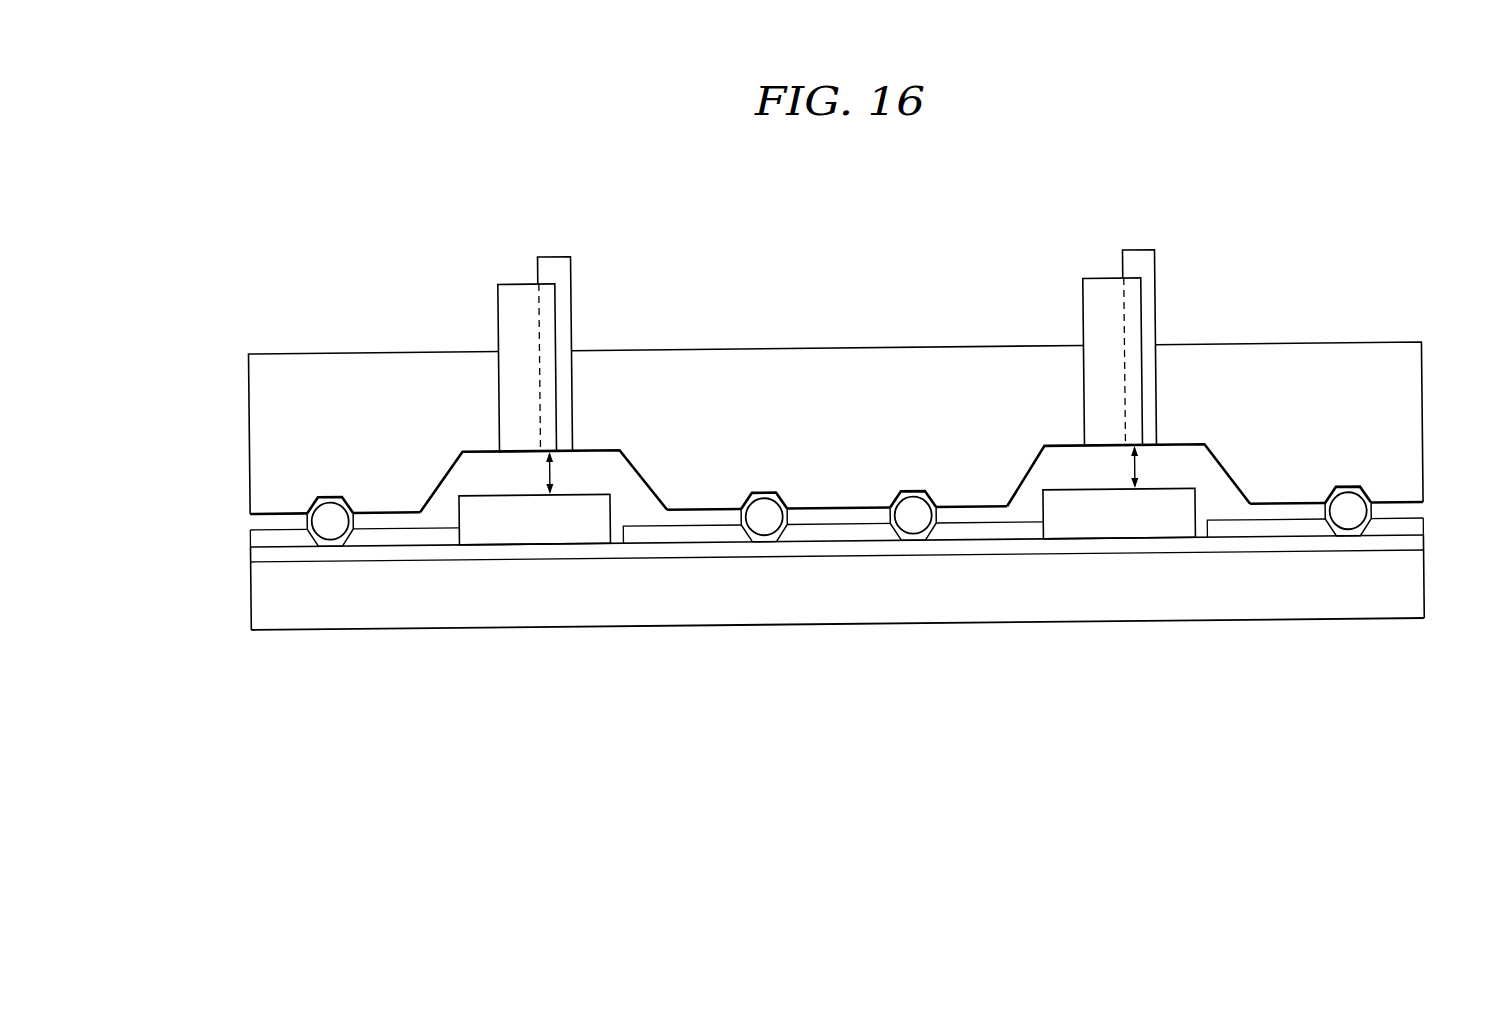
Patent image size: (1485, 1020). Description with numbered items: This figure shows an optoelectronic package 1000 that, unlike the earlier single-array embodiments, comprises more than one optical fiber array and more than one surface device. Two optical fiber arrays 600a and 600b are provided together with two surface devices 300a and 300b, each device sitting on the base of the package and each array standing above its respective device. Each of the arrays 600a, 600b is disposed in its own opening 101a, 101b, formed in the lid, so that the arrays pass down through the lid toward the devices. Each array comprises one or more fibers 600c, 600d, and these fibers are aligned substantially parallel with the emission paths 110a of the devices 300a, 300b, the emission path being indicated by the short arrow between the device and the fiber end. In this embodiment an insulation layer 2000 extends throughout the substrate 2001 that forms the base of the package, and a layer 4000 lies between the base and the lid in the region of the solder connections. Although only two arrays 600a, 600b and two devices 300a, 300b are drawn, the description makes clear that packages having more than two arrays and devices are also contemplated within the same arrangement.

The optoelectronic assembly 1000 is at (1350, 190).
The opening 101a is at (518, 453).
The opening 101b is at (1108, 455).
The emission path 110a is at (555, 481).
The surface device 300a is at (542, 550).
The surface device 300b is at (1063, 531).
The optical fiber array 600a is at (540, 265).
The optical fiber array 600b is at (1143, 322).
The fiber 600c is at (573, 265).
The fiber 600d is at (1143, 259).
The insulation layer 2000 is at (250, 551).
The substrate 2001 is at (1315, 631).
The bonding layer 4000 is at (265, 530).